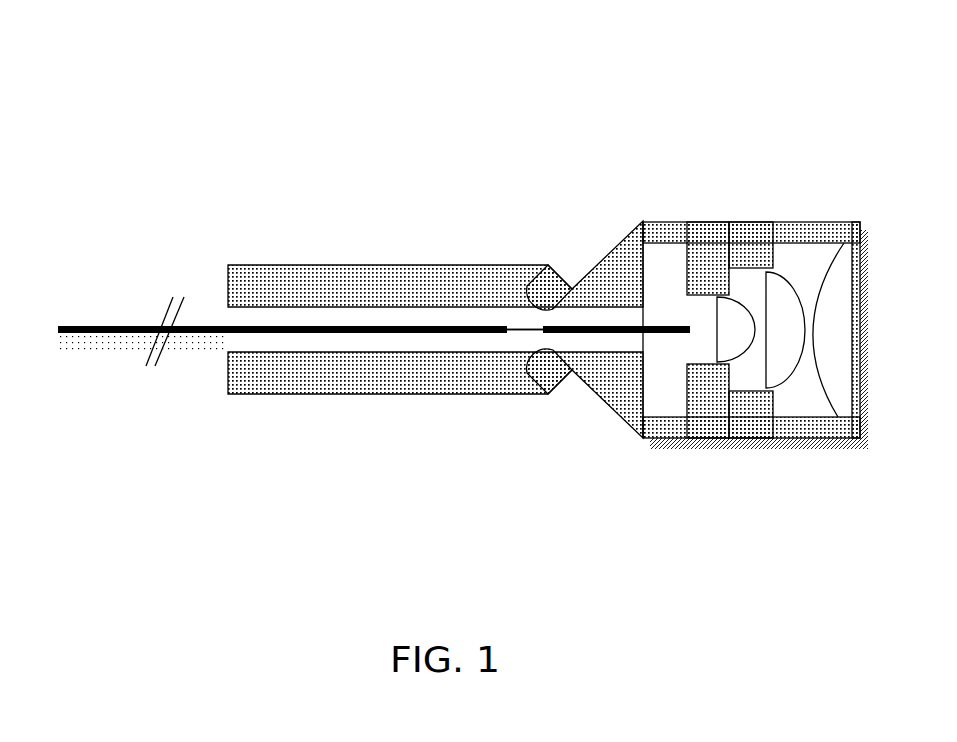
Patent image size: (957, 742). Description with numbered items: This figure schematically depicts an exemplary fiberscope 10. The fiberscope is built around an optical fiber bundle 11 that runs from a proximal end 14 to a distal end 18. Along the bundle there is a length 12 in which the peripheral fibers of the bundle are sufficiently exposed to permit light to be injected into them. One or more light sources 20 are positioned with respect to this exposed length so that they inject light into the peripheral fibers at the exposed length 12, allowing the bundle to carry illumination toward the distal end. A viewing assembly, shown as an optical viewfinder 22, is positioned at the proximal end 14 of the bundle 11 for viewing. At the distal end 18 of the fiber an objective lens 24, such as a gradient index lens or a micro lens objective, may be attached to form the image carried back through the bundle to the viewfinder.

The fiberscope 10 is at (342, 128).
The optical fiber bundle 11 is at (185, 327).
The length 12 is at (518, 352).
The proximal end 14 is at (665, 306).
The distal end 18 is at (124, 292).
The light source 20 is at (584, 256).
The optical viewfinder 22 is at (818, 406).
The objective lens 24 is at (70, 354).